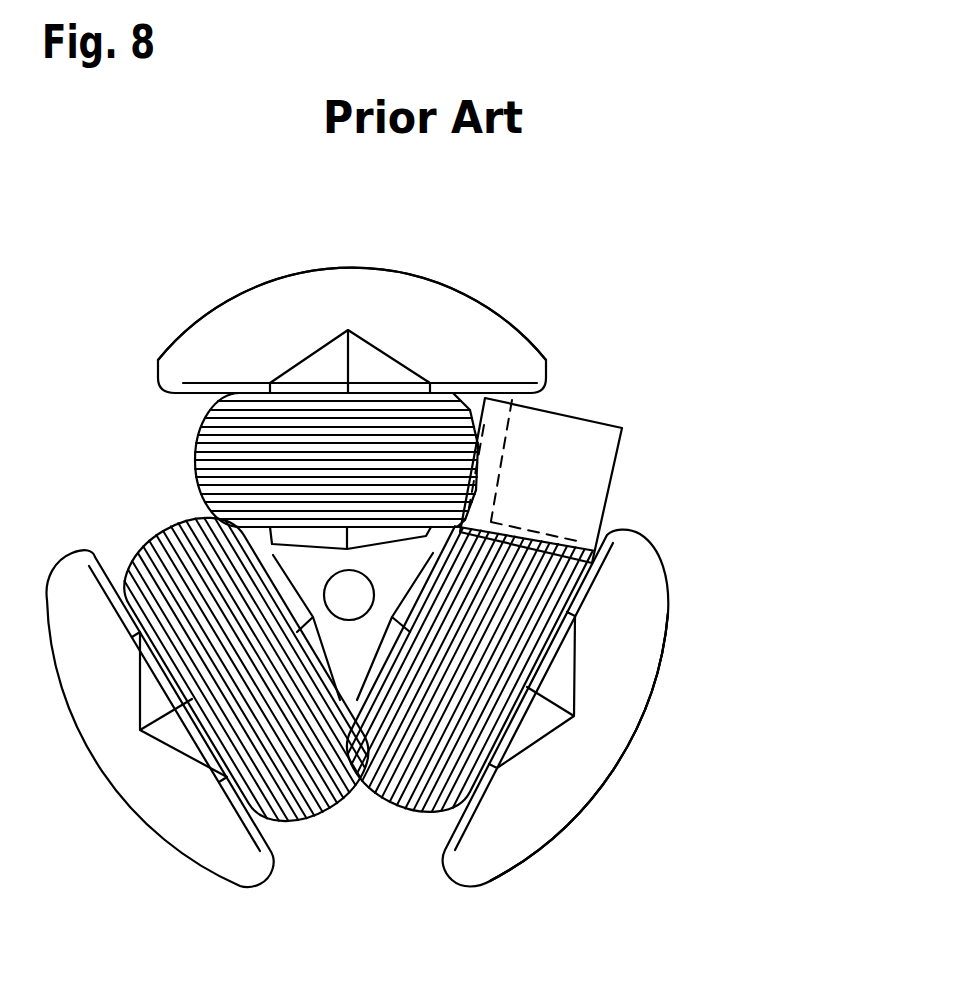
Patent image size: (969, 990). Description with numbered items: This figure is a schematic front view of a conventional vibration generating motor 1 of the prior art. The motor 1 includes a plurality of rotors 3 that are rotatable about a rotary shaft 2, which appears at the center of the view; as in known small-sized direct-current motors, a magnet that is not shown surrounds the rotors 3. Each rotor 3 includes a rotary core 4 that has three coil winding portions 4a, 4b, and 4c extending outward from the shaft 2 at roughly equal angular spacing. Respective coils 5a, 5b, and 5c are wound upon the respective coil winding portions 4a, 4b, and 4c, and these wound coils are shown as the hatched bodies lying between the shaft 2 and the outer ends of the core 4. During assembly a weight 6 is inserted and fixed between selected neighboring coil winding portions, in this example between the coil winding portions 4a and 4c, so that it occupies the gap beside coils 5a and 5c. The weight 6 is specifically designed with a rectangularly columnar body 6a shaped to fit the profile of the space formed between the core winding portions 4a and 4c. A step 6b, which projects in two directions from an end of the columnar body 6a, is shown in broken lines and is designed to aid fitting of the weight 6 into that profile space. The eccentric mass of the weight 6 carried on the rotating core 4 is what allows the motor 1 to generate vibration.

The vibration generating motor 1 is at (738, 250).
The rotary shaft 2 is at (356, 599).
The rotor 3 is at (558, 866).
The rotary core 4 is at (670, 647).
The coil winding portion 4a is at (530, 722).
The coil winding portion 4b is at (187, 737).
The coil winding portion 4c is at (322, 368).
The coil 5a is at (397, 805).
The coil 5b is at (158, 535).
The coil 5c is at (395, 420).
The weight 6 is at (623, 455).
The rectangularly columnar body 6a is at (579, 437).
The step 6b is at (577, 541).